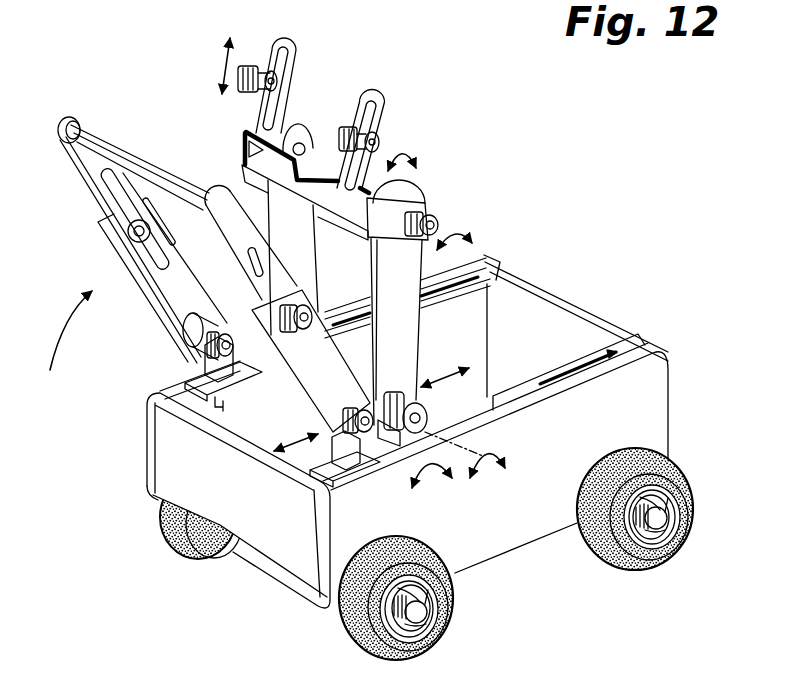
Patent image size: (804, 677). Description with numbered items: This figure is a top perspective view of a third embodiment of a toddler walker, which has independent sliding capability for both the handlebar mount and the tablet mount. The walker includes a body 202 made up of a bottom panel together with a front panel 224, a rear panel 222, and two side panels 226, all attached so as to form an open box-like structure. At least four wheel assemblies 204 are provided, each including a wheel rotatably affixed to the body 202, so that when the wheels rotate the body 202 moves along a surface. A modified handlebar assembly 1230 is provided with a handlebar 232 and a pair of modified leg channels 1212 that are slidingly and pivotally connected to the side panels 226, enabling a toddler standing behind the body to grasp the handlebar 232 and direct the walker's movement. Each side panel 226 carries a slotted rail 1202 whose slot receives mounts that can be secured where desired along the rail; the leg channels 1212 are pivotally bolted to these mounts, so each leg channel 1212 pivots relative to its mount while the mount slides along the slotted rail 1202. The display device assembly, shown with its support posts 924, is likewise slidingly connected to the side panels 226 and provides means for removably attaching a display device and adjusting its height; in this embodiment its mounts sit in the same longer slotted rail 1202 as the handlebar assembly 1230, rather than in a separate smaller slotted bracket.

The body 202 is at (557, 252).
The wheel assemblies 204 is at (450, 593).
The rear panel 222 is at (262, 533).
The front panel 224 is at (577, 333).
The side panels 226 is at (650, 410).
The handlebar 232 is at (102, 143).
The support posts 924 is at (293, 247).
The slotted rail 1202 is at (500, 270).
The leg channels 1212 is at (160, 310).
The handlebar assembly 1230 is at (61, 350).